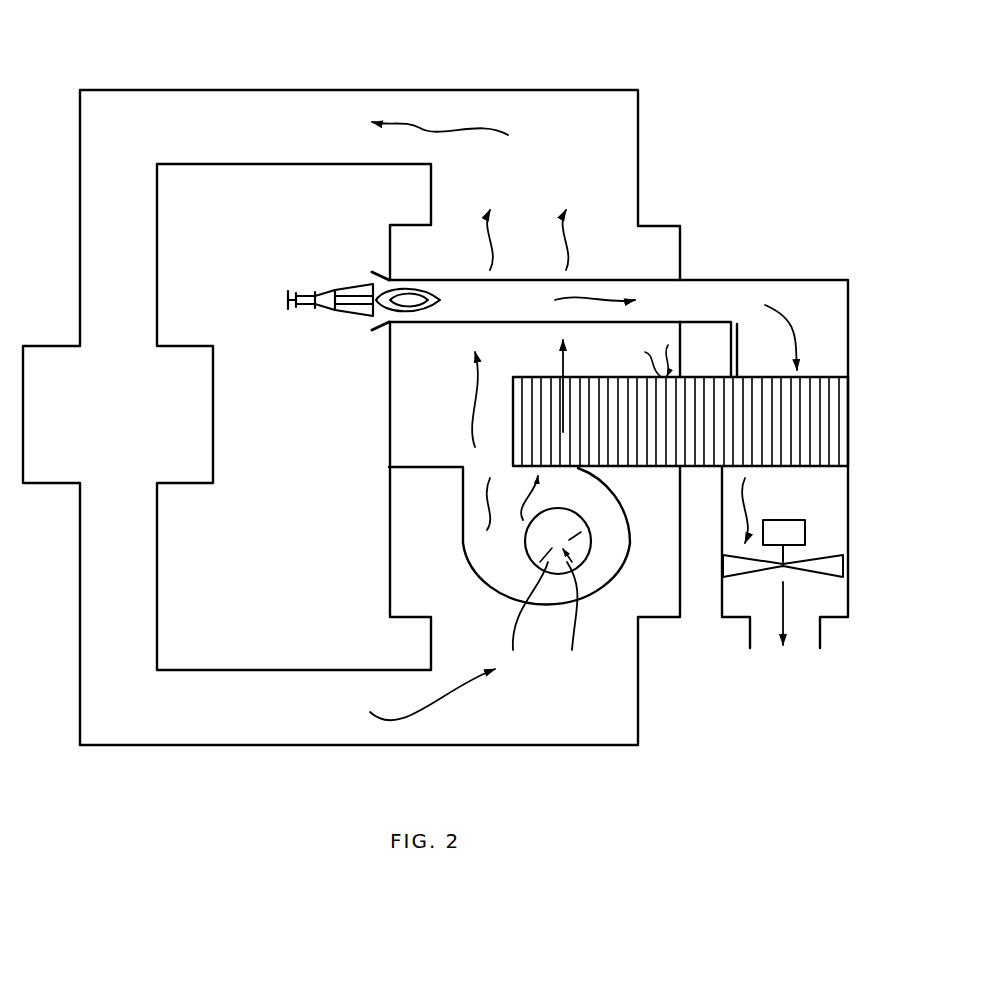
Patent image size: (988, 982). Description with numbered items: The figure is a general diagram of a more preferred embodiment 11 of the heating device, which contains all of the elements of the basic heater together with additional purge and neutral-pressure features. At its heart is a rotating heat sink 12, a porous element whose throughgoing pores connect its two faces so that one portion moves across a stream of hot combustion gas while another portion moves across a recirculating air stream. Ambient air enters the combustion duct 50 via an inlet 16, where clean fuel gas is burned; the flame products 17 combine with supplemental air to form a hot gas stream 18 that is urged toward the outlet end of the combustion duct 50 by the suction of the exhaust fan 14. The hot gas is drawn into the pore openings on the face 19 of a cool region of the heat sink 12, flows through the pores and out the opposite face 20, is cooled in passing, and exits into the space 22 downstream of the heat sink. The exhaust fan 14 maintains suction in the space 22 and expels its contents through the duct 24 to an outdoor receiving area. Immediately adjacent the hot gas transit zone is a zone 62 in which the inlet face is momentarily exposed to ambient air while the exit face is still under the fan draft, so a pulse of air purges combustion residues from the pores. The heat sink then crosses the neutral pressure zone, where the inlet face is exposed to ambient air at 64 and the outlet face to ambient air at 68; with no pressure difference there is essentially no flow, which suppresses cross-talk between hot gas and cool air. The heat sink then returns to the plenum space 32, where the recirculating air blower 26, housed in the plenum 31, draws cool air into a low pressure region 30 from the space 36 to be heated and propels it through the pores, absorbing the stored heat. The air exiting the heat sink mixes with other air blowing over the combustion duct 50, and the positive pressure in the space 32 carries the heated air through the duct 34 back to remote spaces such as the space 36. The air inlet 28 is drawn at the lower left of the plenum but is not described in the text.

The preferred embodiment 11 is at (790, 172).
The rotating heat sink 12 is at (849, 415).
The exhaust fan 14 is at (838, 577).
The inlet 16 is at (375, 282).
The flame products 17 is at (418, 297).
The hot gas stream 18 is at (532, 297).
The face of heat sink 19 is at (805, 377).
The opposite face 20 is at (800, 467).
The space downstream of heat sink 22 is at (780, 497).
The duct 24 is at (822, 638).
The recirculating air blower 26 is at (463, 517).
The air inlet 28 is at (393, 669).
The low pressure region 30 is at (535, 652).
The plenum 31 is at (389, 433).
The plenum space 32 is at (562, 180).
The duct 34 is at (398, 90).
The space to be heated 36 is at (187, 418).
The combustion duct 50 is at (660, 280).
The purge zone 62 is at (731, 362).
The ambient air exposure at inlet face 64 is at (757, 367).
The ambient air exposure at outlet face 68 is at (712, 504).